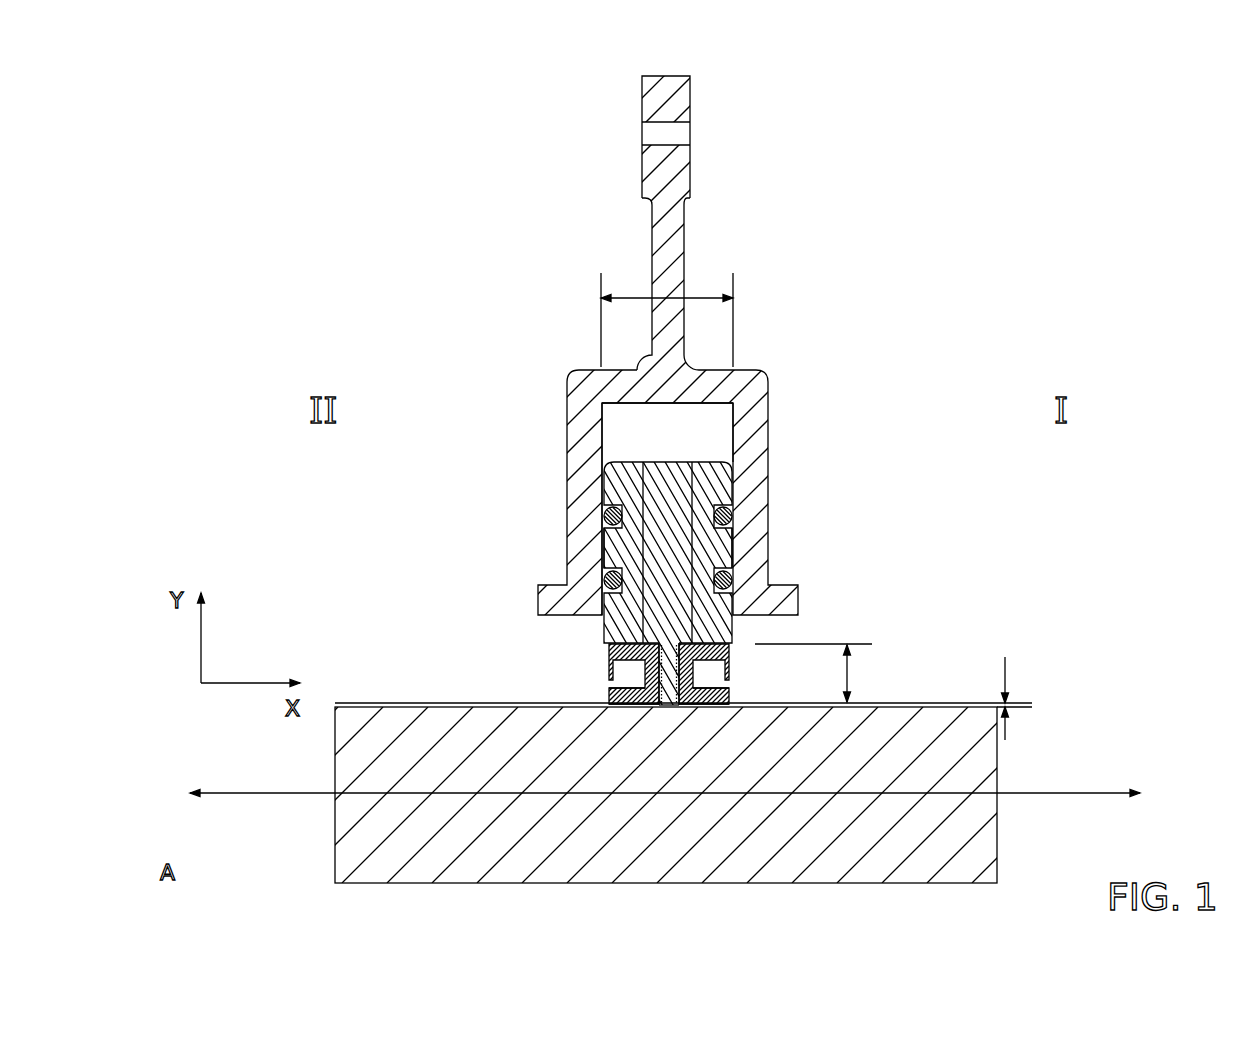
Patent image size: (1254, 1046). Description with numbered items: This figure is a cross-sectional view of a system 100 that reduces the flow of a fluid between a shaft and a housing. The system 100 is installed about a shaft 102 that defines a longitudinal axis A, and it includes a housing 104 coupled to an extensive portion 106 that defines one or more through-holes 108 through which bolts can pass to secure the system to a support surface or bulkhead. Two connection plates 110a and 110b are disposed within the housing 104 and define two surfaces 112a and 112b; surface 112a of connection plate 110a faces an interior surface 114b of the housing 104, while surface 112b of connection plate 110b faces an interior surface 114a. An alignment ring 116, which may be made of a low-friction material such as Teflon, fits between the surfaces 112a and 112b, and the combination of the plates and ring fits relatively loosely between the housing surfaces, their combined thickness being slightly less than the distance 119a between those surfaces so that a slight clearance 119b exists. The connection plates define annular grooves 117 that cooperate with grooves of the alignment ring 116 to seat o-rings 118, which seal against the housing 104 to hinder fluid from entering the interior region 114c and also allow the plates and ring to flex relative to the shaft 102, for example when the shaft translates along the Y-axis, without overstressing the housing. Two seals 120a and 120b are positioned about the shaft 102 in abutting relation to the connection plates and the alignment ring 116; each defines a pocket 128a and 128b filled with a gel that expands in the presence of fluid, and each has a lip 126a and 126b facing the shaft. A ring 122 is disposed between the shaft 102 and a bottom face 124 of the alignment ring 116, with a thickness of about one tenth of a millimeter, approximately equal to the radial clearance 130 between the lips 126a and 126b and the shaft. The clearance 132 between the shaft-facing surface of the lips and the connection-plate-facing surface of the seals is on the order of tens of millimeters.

The system 100 is at (912, 202).
The shaft 102 is at (822, 853).
The housing 104 is at (768, 377).
The extensive portion 106 is at (686, 226).
The through-holes 108 is at (690, 133).
The connection plate 110a is at (640, 498).
The connection plate 110b is at (729, 496).
The surface 112a is at (641, 476).
The surface 112b is at (695, 487).
The interior surface 114a is at (602, 442).
The interior surface 114b is at (733, 423).
The interior region 114c is at (617, 413).
The alignment ring 116 is at (653, 604).
The annular grooves 117 is at (603, 570).
The o-rings 118 is at (605, 516).
The distance 119a is at (621, 294).
The clearance 119b is at (603, 483).
The seal 120a is at (617, 662).
The seal 120b is at (720, 658).
The ring 122 is at (663, 713).
The bottom face 124 is at (680, 697).
The lip 126a is at (610, 697).
The lip 126b is at (730, 695).
The pocket 128a is at (638, 680).
The pocket 128b is at (702, 680).
The radial clearance 130 is at (1024, 700).
The clearance 132 is at (850, 669).